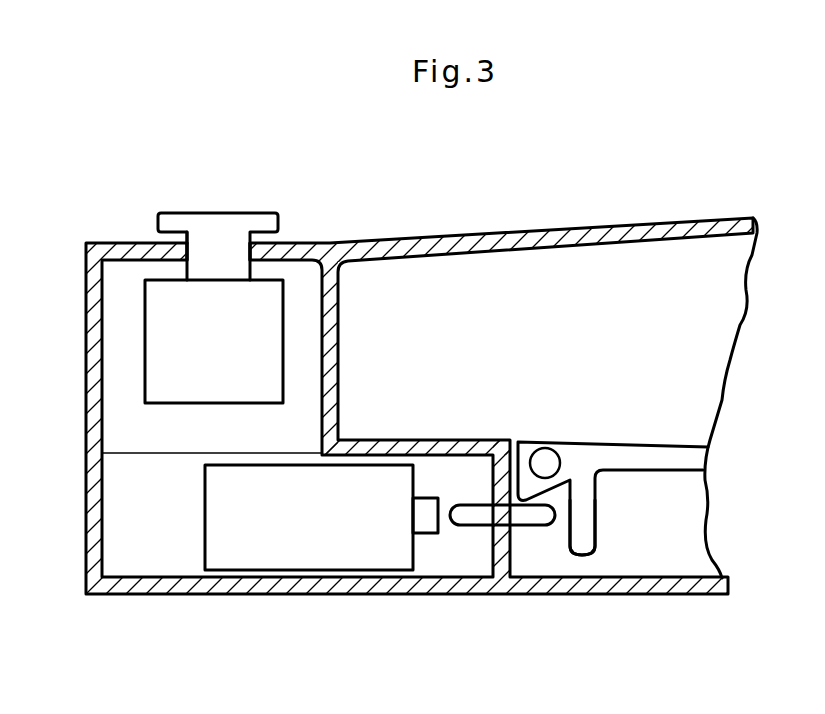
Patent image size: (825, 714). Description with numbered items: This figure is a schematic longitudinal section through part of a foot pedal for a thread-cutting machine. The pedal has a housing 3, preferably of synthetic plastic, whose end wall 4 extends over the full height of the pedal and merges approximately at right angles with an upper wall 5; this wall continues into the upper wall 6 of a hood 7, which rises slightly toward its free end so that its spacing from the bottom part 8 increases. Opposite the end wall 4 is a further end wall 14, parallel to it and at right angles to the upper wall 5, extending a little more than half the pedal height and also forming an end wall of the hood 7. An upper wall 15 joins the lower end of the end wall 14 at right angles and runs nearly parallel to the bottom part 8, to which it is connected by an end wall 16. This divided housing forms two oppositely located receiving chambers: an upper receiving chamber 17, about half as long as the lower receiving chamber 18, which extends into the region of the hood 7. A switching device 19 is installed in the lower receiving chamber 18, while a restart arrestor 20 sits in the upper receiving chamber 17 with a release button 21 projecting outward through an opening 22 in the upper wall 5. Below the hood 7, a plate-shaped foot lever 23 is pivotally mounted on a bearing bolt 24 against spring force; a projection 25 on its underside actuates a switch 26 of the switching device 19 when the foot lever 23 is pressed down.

The housing 3 is at (129, 240).
The end wall 4 is at (100, 337).
The upper wall 5 is at (287, 247).
The upper wall of the hood 6 is at (598, 232).
The hood 7 is at (708, 215).
The bottom part 8 is at (653, 587).
The end wall 14 is at (348, 368).
The upper wall 15 is at (428, 447).
The end wall 16 is at (503, 557).
The upper receiving chamber 17 is at (303, 310).
The lower receiving chamber 18 is at (150, 562).
The switching device 19 is at (280, 543).
The restart arrestor 20 is at (163, 378).
The release button 21 is at (206, 231).
The opening 22 is at (185, 233).
The foot lever 23 is at (636, 453).
The bearing bolt 24 is at (546, 460).
The projection 25 is at (583, 511).
The switch 26 is at (422, 523).